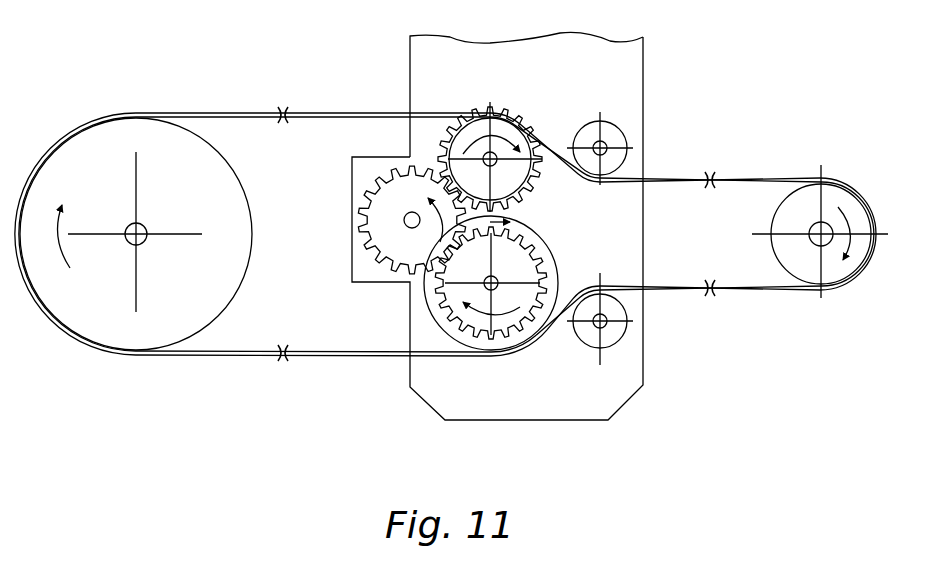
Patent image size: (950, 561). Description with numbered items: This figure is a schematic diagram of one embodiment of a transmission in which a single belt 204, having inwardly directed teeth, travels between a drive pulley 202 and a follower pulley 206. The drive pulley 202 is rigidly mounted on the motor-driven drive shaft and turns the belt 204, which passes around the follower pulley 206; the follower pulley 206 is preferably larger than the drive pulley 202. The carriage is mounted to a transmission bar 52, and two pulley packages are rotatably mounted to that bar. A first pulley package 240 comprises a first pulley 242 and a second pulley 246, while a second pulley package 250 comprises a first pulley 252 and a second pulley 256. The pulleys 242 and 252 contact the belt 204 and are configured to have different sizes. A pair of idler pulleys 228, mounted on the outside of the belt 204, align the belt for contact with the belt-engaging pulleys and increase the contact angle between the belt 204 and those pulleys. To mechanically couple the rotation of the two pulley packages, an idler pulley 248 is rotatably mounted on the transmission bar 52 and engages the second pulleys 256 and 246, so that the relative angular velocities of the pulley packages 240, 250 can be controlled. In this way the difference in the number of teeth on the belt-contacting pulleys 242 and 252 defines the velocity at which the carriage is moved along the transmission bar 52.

The transmission bar 52 is at (643, 58).
The drive pulley 202 is at (843, 284).
The belt 204 is at (661, 178).
The follower pulley 206 is at (133, 352).
The idler pulleys 228 is at (627, 140).
The first pulley package 240 is at (473, 283).
The first pulley 242 is at (560, 270).
The second pulley 246 is at (440, 318).
The idler pulley 248 is at (352, 213).
The second pulley package 250 is at (460, 138).
The first pulley 252 is at (530, 178).
The second pulley 256 is at (437, 155).